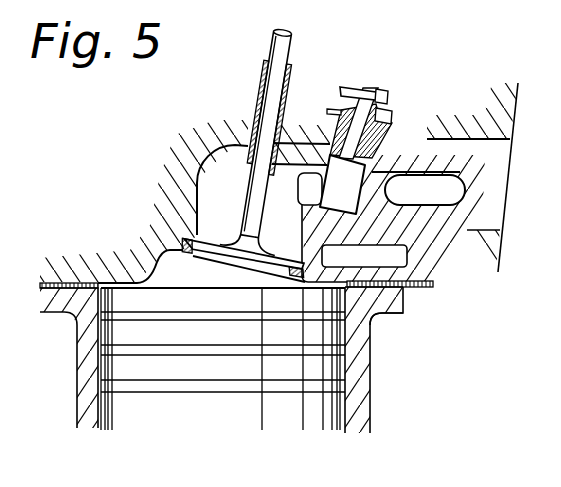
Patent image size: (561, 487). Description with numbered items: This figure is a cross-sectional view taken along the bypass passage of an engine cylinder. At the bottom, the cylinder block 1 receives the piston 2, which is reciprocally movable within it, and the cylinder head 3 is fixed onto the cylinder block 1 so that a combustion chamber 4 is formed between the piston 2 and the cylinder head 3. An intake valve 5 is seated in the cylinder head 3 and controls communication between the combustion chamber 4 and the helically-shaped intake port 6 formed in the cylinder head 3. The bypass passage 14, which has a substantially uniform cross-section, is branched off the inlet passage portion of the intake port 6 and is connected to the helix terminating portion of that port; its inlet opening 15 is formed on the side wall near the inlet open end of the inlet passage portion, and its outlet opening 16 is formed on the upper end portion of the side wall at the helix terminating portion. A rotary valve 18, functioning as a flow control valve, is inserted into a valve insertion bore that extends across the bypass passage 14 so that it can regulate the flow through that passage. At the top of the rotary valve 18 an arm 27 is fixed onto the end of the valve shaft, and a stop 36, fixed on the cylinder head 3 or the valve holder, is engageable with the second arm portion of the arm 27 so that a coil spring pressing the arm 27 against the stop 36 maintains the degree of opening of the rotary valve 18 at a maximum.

The cylinder block 1 is at (85, 368).
The piston 2 is at (153, 408).
The cylinder head 3 is at (137, 263).
The combustion chamber 4 is at (178, 284).
The intake valve 5 is at (253, 202).
The helically-shaped intake port 6 is at (464, 147).
The bypass passage 14 is at (380, 163).
The inlet opening 15 is at (451, 194).
The outlet opening 16 is at (298, 190).
The rotary valve 18 is at (349, 119).
The arm 27 is at (340, 87).
The stop 36 is at (386, 305).